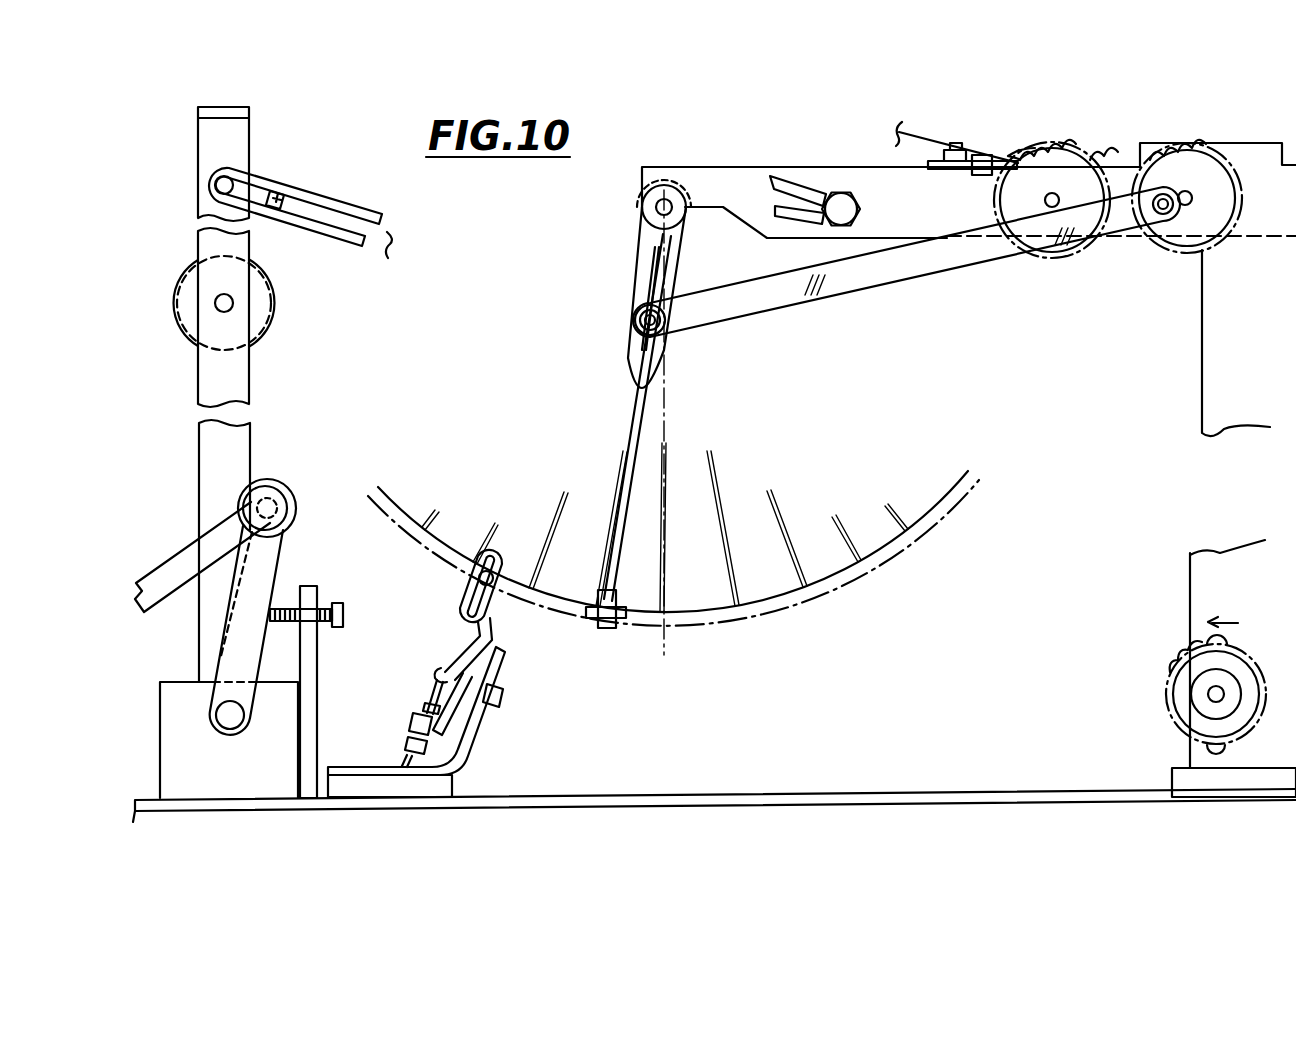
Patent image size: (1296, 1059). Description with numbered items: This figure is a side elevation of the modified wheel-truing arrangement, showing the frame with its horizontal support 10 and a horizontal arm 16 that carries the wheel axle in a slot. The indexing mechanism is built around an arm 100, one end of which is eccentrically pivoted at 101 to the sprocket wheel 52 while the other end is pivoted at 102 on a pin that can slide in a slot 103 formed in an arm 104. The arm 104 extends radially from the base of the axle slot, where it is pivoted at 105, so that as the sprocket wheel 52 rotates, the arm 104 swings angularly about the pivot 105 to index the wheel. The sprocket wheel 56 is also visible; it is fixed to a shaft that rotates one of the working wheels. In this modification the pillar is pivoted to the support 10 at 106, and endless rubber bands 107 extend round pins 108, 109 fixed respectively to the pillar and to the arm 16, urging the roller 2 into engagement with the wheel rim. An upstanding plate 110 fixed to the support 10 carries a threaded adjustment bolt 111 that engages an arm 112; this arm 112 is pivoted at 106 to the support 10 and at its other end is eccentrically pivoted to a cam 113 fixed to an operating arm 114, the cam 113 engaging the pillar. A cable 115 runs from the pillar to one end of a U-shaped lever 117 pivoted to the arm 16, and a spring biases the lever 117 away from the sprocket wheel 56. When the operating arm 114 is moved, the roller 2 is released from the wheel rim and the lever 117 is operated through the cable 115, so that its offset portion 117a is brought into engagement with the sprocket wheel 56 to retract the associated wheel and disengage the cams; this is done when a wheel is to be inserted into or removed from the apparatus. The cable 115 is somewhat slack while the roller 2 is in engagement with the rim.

The roller 2 is at (260, 319).
The horizontal support 10 is at (850, 797).
The horizontal arm 16 is at (927, 212).
The sprocket wheel 52 is at (1212, 215).
The sprocket wheel 56 is at (1002, 197).
The arm 100 is at (813, 300).
The eccentric pivot 101 is at (1164, 216).
The pivot 102 is at (660, 340).
The slot 103 is at (650, 283).
The arm 104 is at (638, 406).
The pivot 105 is at (655, 213).
The pivot 106 is at (235, 725).
The endless rubber bands 107 is at (318, 235).
The pin 108 is at (217, 187).
The pin 109 is at (840, 198).
The upstanding plate 110 is at (330, 702).
The threaded adjustment bolt 111 is at (338, 620).
The arm 112 is at (270, 568).
The cam 113 is at (291, 488).
The operating arm 114 is at (135, 580).
The cable 115 is at (388, 259).
The U-shaped lever 117 is at (930, 163).
The offset portion 117a is at (1104, 178).